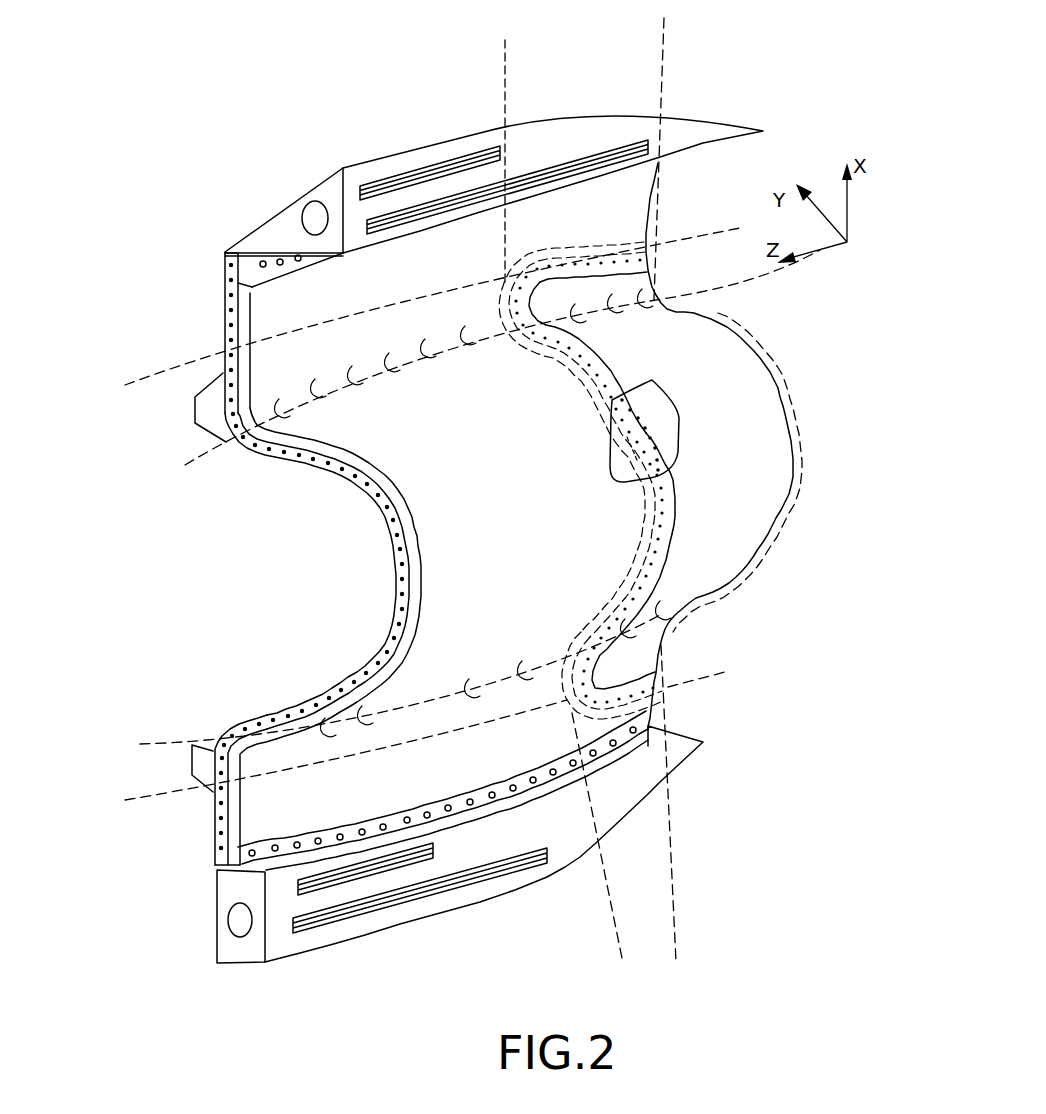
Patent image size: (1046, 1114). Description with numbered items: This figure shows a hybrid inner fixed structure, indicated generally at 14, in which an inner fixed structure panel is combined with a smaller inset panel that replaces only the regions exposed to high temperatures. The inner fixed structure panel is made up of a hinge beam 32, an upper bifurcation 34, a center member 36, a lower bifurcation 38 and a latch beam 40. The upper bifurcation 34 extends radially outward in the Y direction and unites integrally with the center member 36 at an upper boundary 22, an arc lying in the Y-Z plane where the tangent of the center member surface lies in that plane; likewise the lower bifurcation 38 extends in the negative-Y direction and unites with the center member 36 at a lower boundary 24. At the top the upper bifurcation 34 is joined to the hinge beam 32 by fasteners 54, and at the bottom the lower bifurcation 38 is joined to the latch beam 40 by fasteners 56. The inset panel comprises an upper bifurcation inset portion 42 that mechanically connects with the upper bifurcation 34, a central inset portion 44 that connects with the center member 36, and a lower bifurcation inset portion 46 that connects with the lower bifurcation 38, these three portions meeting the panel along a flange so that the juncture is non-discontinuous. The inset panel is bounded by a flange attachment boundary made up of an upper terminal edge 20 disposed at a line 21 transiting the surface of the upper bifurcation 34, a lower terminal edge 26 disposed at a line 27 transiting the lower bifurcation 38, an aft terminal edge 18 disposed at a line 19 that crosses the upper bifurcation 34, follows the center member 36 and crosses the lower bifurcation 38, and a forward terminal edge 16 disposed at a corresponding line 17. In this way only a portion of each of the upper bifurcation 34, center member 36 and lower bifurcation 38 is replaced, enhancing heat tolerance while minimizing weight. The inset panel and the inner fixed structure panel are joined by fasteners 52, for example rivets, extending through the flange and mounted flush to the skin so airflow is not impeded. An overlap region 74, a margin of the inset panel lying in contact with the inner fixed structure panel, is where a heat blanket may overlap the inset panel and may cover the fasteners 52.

The fan case panel assembly 14 is at (424, 78).
The forward terminal edge 16 is at (620, 417).
The line 17 is at (610, 897).
The aft terminal edge 18 is at (787, 398).
The line 19 is at (665, 843).
The upper terminal edge 20 is at (558, 257).
The line 21 is at (679, 242).
The upper boundary 22 is at (683, 292).
The lower boundary 24 is at (767, 577).
The lower terminal edge 26 is at (603, 703).
The line 27 is at (673, 683).
The hinge beam 32 is at (327, 192).
The upper bifurcation 34 is at (313, 358).
The center member 36 is at (447, 507).
The lower bifurcation 38 is at (260, 795).
The latch beam 40 is at (227, 893).
The upper bifurcation inset portion 42 is at (620, 278).
The central inset portion 44 is at (743, 375).
The lower bifurcation inset portion 46 is at (623, 662).
The fasteners 52 is at (653, 448).
The fasteners 54 is at (263, 263).
The fasteners 56 is at (252, 853).
The overlap region 74 is at (530, 277).